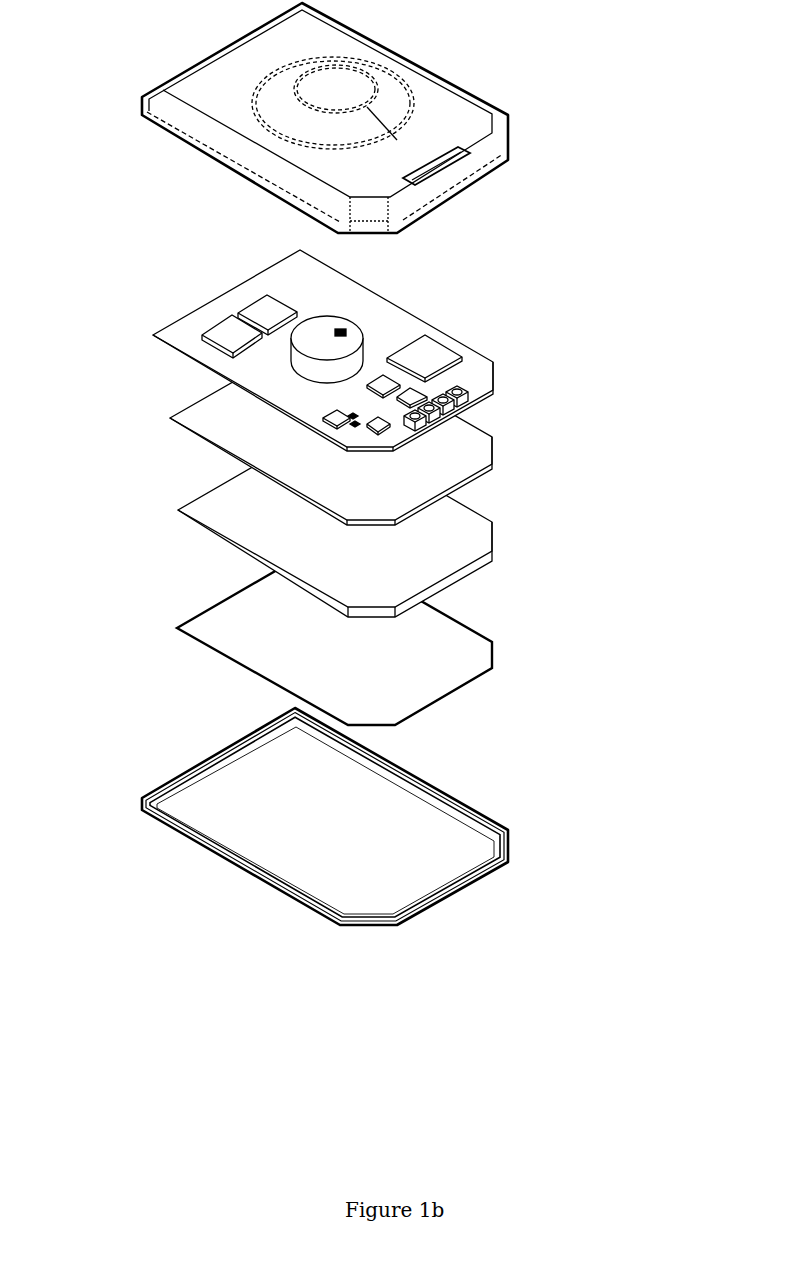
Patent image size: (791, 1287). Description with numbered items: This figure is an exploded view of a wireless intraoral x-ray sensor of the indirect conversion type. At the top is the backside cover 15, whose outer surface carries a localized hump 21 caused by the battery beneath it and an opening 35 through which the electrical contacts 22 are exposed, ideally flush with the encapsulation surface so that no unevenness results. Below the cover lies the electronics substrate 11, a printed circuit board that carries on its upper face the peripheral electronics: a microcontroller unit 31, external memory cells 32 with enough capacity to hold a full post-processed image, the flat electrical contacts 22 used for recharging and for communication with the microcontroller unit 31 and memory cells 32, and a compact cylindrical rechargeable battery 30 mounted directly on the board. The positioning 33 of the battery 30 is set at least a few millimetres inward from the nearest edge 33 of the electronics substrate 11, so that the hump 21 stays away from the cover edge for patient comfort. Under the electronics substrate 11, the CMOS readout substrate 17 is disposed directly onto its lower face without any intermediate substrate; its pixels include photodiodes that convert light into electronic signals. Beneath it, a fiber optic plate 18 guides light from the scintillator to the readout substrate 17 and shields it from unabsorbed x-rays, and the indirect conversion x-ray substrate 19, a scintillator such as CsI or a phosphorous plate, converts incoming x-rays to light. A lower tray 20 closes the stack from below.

The electronics substrate 11 is at (493, 392).
The backside cover 15 is at (510, 150).
The readout substrate 17 is at (492, 460).
The fiber optic plate 18 is at (492, 548).
The indirect conversion x-ray substrate 19 is at (492, 667).
The bottom tray 20 is at (510, 853).
The hump 21 is at (392, 83).
The electrical contacts 22 is at (465, 397).
The rechargeable battery 30 is at (352, 331).
The microcontroller unit 31 is at (437, 343).
The external memory cells 32 is at (257, 300).
The positioning of the battery 33 is at (293, 378).
The opening 35 is at (455, 166).